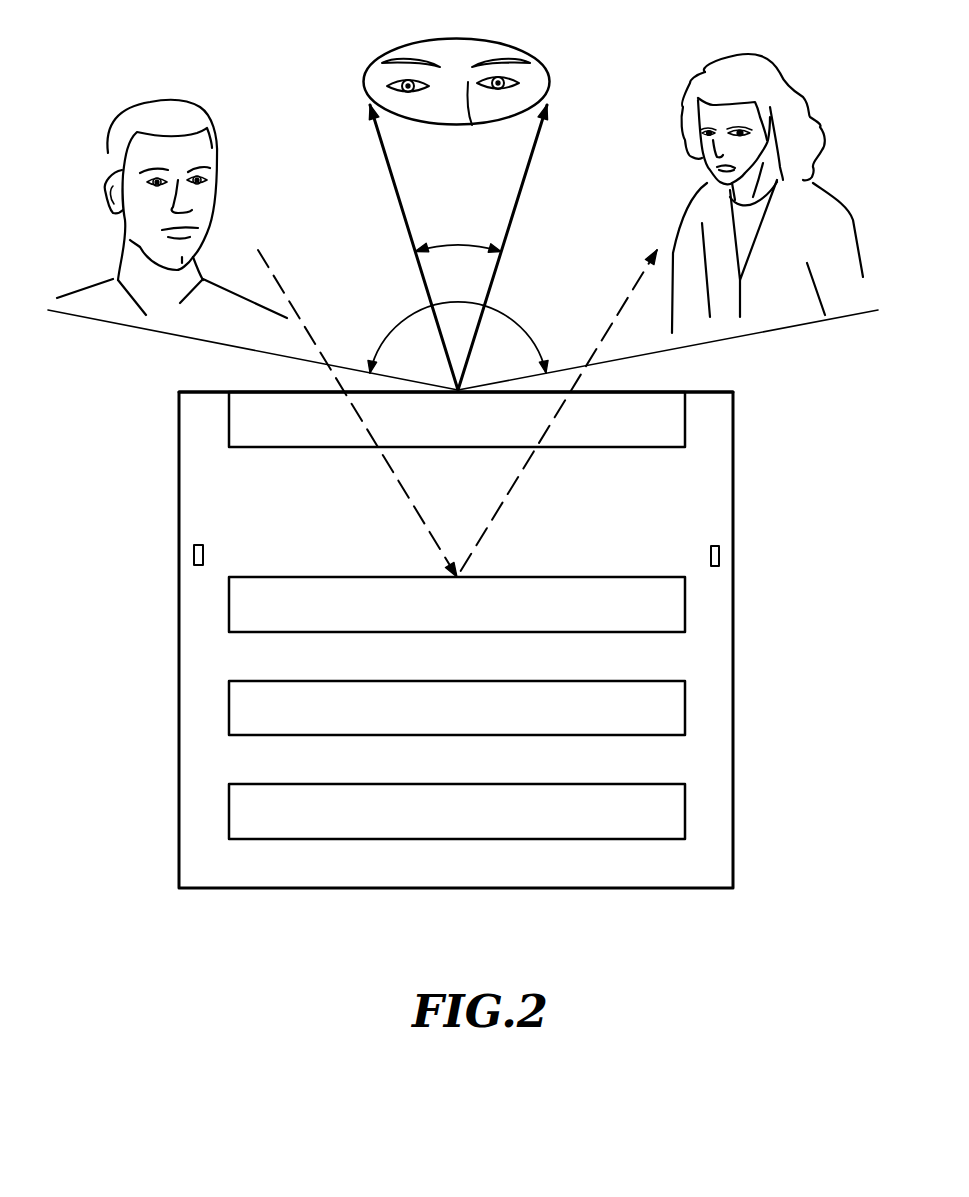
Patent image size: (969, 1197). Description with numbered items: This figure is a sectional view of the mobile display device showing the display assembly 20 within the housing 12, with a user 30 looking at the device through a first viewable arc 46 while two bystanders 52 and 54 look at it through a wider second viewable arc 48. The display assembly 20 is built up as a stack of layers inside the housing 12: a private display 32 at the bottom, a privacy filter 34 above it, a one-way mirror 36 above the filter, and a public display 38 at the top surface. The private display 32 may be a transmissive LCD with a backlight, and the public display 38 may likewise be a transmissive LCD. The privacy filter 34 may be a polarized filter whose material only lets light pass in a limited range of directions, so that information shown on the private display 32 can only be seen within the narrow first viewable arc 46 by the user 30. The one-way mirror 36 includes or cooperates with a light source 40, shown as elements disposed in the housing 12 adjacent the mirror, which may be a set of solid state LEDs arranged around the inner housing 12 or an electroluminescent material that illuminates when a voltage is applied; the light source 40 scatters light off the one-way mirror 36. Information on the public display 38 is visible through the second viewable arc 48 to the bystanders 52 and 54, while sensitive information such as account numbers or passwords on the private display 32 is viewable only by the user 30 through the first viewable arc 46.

The housing 12 is at (178, 422).
The display assembly 20 is at (273, 392).
The user 30 is at (470, 50).
The private display 32 is at (268, 784).
The privacy filter 34 is at (268, 681).
The one-way mirror 36 is at (268, 578).
The public display 38 is at (268, 448).
The light source 40 is at (196, 555).
The first viewable arc 46 is at (457, 243).
The second viewable arc 48 is at (403, 317).
The bystander 52 is at (203, 108).
The bystander 54 is at (780, 67).